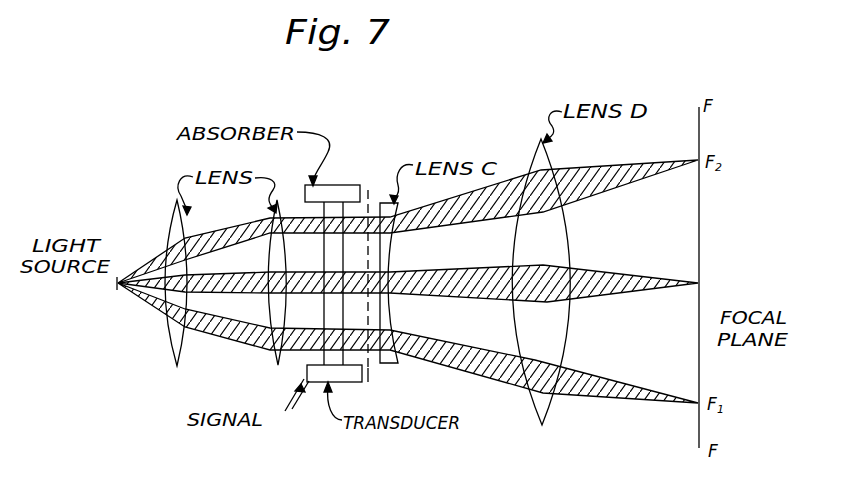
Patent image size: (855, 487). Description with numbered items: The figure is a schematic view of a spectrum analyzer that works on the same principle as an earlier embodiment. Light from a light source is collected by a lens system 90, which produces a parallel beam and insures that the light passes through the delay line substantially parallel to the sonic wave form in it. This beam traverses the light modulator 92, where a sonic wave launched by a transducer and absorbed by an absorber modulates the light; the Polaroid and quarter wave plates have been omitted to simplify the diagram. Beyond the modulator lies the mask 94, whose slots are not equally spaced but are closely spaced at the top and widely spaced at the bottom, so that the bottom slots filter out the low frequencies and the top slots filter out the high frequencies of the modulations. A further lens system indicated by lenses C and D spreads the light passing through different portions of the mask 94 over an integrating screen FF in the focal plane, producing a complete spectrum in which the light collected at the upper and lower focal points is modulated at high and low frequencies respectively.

The lens system 90 is at (283, 358).
The light modulator 92 is at (331, 185).
The mask 94 is at (372, 376).